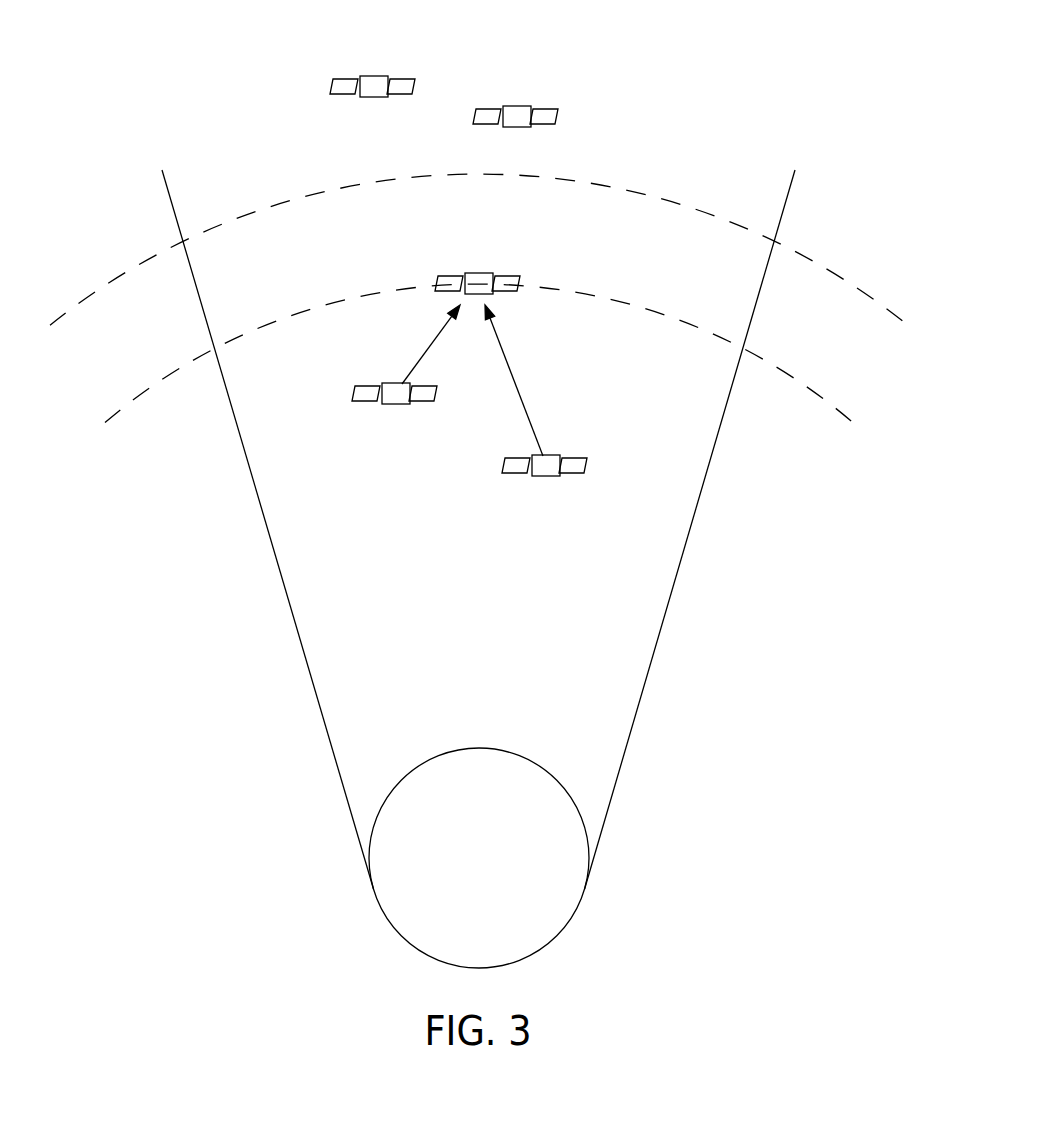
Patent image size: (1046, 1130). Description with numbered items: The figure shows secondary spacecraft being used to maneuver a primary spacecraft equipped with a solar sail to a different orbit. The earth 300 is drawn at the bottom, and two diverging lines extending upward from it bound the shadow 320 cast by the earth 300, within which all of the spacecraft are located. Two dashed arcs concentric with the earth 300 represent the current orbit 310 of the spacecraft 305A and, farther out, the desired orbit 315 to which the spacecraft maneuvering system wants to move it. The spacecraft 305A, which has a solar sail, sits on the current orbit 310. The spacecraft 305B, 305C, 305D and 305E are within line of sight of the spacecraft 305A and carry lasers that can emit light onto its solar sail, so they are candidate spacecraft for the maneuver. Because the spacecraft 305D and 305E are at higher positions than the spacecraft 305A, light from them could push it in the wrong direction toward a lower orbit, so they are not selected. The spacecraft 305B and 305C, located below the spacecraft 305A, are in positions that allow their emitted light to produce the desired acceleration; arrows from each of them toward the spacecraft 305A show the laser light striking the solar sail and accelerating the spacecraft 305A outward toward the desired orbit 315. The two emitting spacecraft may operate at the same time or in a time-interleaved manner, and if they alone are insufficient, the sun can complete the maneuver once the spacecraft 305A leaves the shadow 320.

The earth 300 is at (458, 886).
The spacecraft 305A is at (479, 273).
The spacecraft 305B is at (392, 405).
The spacecraft 305C is at (545, 477).
The spacecraft 305D is at (374, 77).
The spacecraft 305E is at (517, 107).
The current orbit 310 is at (675, 315).
The desired orbit 315 is at (700, 210).
The shadow 320 is at (785, 208).